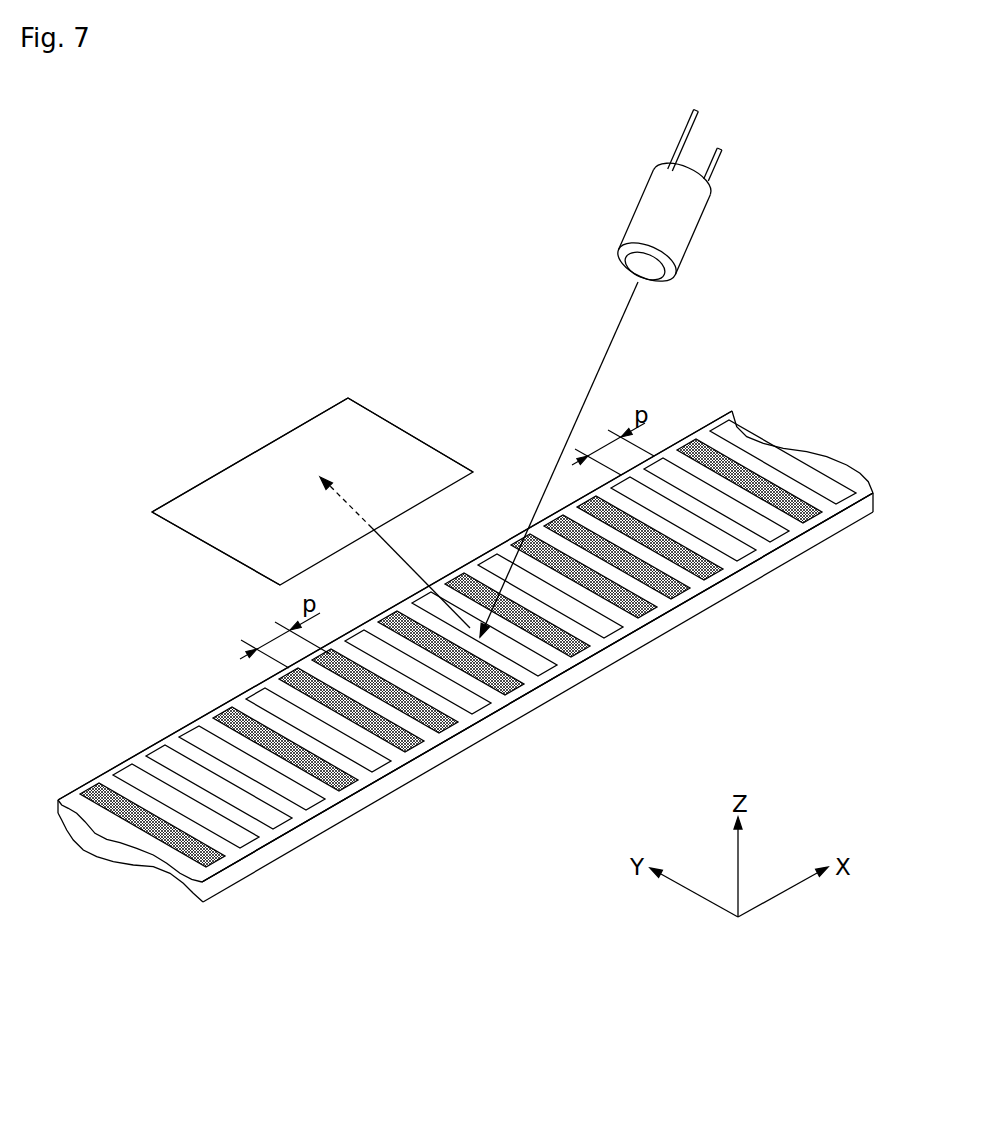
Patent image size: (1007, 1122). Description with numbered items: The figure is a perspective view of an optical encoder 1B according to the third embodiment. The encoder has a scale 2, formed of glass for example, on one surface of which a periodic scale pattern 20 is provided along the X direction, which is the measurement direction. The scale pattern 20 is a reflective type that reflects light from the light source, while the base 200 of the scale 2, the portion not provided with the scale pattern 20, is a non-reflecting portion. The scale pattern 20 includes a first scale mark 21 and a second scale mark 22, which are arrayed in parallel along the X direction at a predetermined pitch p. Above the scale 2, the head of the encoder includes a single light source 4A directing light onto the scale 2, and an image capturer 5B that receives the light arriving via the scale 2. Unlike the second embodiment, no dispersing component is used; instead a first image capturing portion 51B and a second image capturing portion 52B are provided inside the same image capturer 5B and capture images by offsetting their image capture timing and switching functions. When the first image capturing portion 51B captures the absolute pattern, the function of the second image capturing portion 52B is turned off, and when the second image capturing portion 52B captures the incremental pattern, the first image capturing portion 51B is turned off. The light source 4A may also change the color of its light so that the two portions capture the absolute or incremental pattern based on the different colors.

The optical encoder 1B is at (780, 312).
The scale 2 is at (815, 578).
The scale pattern 20 is at (193, 725).
The first scale mark 21 is at (657, 618).
The second scale mark 22 is at (140, 752).
The base 200 is at (593, 643).
The light source 4A is at (636, 206).
The image capturer 5B is at (380, 400).
The first image capturing portion 51B is at (268, 442).
The second image capturing portion 52B is at (187, 493).